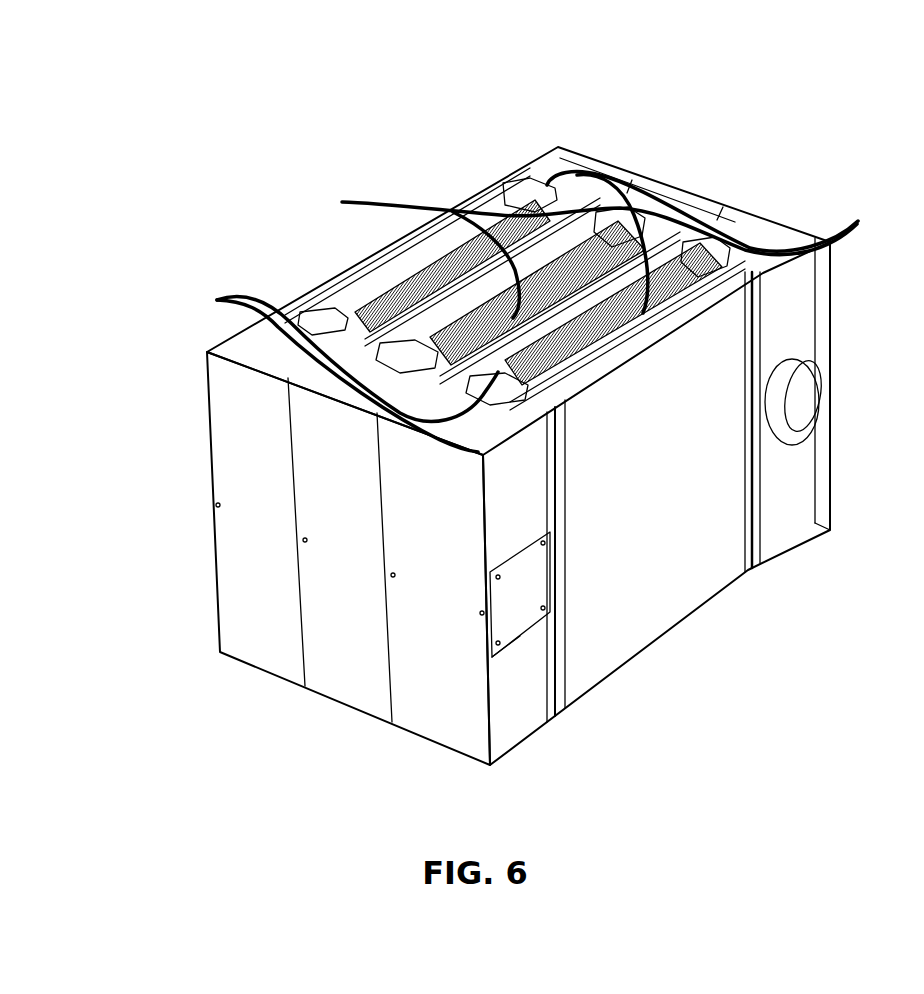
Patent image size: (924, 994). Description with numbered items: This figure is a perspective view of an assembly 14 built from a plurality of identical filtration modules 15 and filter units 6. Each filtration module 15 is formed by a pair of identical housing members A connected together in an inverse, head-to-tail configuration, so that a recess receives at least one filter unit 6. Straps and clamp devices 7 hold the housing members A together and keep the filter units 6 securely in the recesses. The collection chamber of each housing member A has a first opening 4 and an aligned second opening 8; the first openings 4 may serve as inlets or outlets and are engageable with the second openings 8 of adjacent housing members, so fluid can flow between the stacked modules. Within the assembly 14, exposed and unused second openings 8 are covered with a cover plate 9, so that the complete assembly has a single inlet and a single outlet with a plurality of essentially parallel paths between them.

The assembly 14 is at (783, 147).
The filtration module 15 is at (232, 477).
The housing member A is at (572, 162).
The filter unit 6 is at (400, 293).
The clamp device 7 is at (539, 312).
The first opening 4 is at (815, 410).
The second opening 8 is at (514, 545).
The cover plate 9 is at (517, 617).